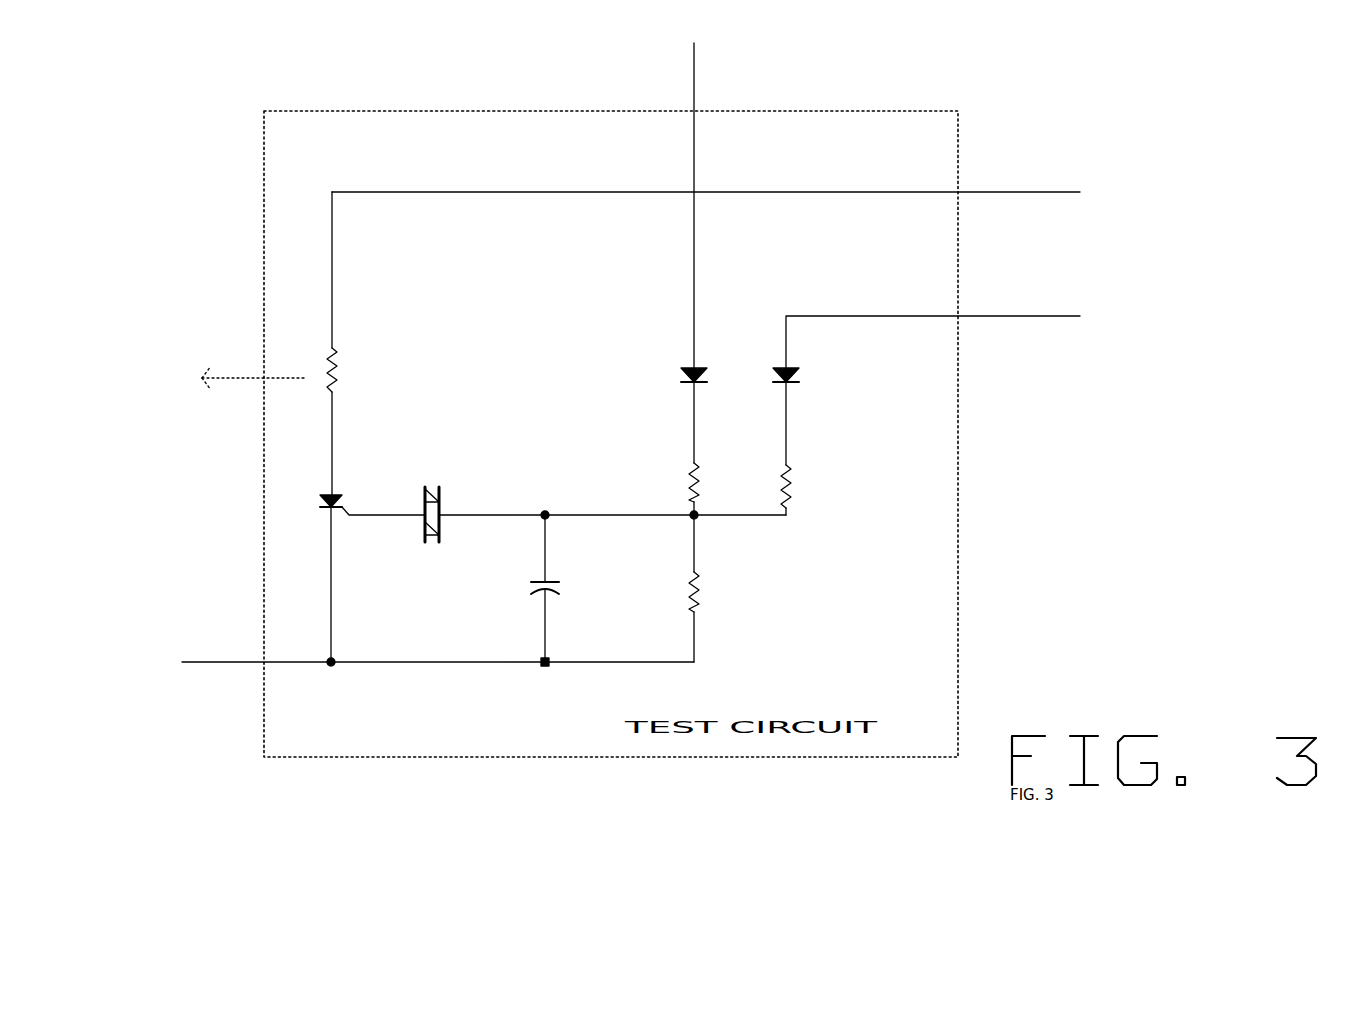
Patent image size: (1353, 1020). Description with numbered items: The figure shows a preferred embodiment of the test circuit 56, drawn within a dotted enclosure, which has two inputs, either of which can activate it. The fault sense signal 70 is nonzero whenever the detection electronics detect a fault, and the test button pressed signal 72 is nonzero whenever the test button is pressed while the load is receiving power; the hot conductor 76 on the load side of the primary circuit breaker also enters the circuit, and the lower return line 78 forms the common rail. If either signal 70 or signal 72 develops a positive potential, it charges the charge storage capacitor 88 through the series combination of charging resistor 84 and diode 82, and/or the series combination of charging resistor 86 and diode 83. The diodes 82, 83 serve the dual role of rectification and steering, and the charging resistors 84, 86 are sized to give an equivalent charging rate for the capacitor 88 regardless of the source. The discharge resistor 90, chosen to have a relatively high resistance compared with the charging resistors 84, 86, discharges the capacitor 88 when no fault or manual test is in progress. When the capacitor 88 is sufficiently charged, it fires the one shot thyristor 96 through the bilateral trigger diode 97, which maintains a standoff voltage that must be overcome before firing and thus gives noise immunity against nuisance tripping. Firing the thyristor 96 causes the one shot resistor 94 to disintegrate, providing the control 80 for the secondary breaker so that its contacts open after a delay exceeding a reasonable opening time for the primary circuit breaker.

The test circuit 56 is at (970, 547).
The fault sense signal 70 is at (707, 87).
The test button pressed signal 72 is at (1024, 303).
The hot conductor on load side of primary circuit breaker 76 is at (1038, 184).
The ground line 78 is at (438, 652).
The control for secondary breaker 80 is at (253, 377).
The diode 82 is at (653, 355).
The diode 83 is at (773, 357).
The charging resistor 84 is at (680, 490).
The charging resistor 86 is at (797, 478).
The charge storage capacitor 88 is at (558, 595).
The discharge resistor 90 is at (703, 585).
The one shot resistor 94 is at (347, 393).
The one shot thyristor 96 is at (318, 516).
The bilateral trigger diode 97 is at (412, 541).